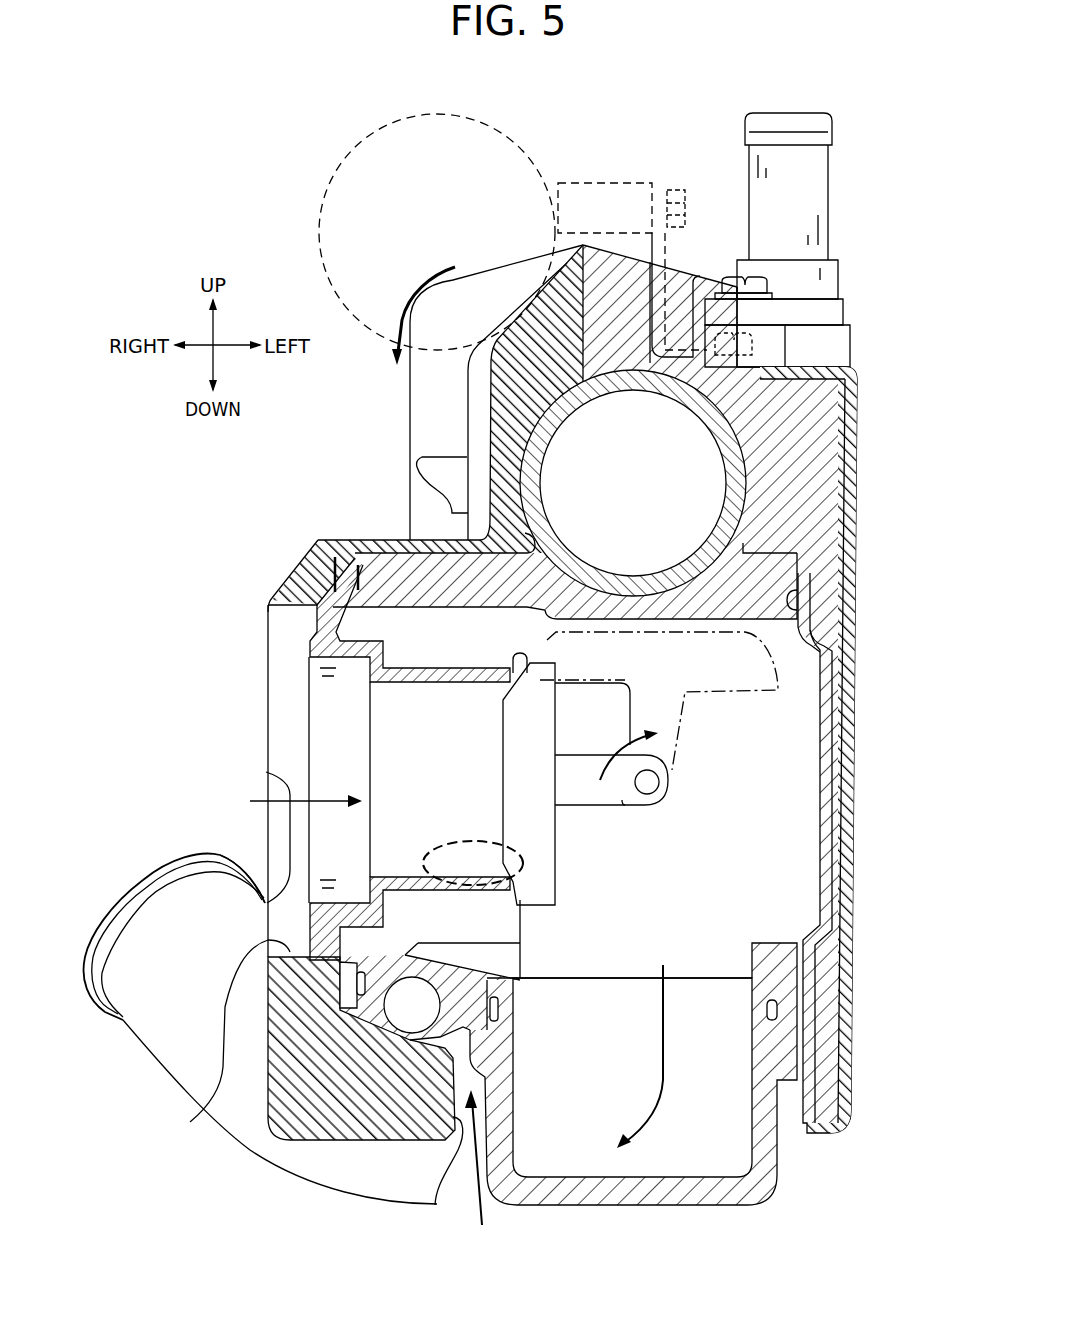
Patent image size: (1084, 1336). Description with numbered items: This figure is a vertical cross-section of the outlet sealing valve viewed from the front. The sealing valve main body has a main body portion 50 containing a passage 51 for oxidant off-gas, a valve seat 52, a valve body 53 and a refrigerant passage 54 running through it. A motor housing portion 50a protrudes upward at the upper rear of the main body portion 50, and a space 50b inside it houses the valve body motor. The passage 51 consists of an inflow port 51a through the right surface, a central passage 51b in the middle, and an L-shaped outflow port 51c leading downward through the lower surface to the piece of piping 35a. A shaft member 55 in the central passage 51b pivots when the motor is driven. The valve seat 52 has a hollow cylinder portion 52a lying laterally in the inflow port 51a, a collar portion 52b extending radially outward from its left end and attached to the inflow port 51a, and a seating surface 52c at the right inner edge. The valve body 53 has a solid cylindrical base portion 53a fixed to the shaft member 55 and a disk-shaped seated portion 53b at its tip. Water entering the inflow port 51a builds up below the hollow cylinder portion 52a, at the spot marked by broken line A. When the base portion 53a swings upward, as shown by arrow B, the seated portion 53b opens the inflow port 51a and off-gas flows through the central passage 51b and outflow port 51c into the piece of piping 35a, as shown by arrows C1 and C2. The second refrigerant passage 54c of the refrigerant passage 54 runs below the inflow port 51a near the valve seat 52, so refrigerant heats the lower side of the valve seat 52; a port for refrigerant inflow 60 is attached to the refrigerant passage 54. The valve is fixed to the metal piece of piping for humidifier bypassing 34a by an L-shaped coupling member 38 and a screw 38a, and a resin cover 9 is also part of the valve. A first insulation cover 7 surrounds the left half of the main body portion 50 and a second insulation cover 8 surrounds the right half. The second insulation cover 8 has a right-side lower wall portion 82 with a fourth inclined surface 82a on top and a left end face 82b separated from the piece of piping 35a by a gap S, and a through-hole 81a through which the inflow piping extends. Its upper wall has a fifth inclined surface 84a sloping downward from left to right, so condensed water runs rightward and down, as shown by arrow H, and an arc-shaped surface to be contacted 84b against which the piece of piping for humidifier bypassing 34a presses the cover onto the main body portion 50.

The piece of piping for humidifier bypassing 34a is at (490, 120).
The coupling member 38 is at (660, 247).
The screw 38a is at (745, 331).
The port for refrigerant inflow 60 is at (800, 113).
The fifth inclined surface 84a is at (488, 272).
The surface to be contacted 84b is at (533, 307).
The arrow H is at (415, 316).
The first insulation cover 7 is at (510, 402).
The resin cover 9 is at (855, 437).
The second insulation cover 8 is at (817, 525).
The main body portion 50 is at (584, 610).
The motor housing portion 50a is at (747, 460).
The space 50b is at (652, 484).
The valve seat 52 is at (305, 640).
The hollow cylinder portion 52a is at (418, 680).
The collar portion 52b is at (345, 575).
The seating surface 52c is at (522, 672).
The passage 51 is at (450, 748).
The inflow port 51a is at (452, 786).
The central passage 51b is at (752, 803).
The outflow port 51c is at (646, 953).
The valve body 53 is at (547, 903).
The base portion 53a is at (587, 793).
The seated portion 53b is at (512, 735).
The shaft member 55 is at (657, 790).
The broken line A is at (461, 842).
The arrow B is at (625, 754).
The arrow C1 is at (297, 790).
The arrow C2 is at (657, 1056).
The piece of piping 35a is at (767, 1177).
The right-side lower wall portion 82 is at (424, 1106).
The fourth inclined surface 82a is at (450, 1043).
The left end face 82b is at (435, 1205).
The through-hole 81a is at (216, 1042).
The refrigerant passage 54 is at (385, 985).
The second refrigerant passage 54c is at (242, 879).
The gap S is at (483, 1163).